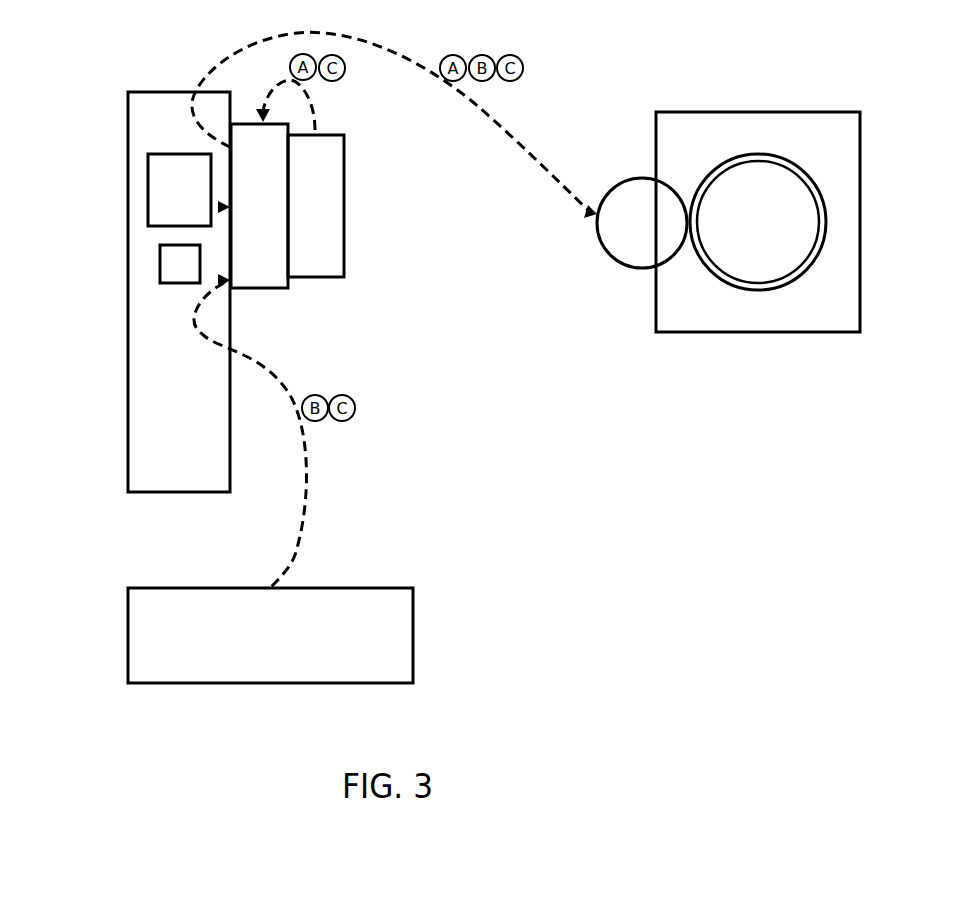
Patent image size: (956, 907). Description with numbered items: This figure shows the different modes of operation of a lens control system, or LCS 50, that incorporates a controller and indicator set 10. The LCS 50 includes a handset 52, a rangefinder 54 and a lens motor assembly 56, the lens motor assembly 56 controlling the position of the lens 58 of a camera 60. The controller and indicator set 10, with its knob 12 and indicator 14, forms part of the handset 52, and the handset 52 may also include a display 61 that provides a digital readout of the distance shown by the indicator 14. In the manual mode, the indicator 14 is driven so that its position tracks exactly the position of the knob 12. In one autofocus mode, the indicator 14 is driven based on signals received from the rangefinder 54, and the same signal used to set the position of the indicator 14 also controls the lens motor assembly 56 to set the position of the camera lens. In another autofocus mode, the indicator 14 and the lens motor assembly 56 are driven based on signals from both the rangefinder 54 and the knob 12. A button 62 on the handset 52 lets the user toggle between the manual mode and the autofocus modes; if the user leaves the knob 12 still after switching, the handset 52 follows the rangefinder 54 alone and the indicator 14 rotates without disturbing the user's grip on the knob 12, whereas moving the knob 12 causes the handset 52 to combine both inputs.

The controller and indicator set 10 is at (318, 247).
The knob 12 is at (347, 245).
The indicator 14 is at (257, 290).
The LCS 50 is at (92, 39).
The handset 52 is at (127, 455).
The rangefinder 54 is at (415, 633).
The lens motor assembly 56 is at (602, 248).
The lens 58 is at (715, 277).
The camera 60 is at (743, 110).
The display 61 is at (147, 170).
The button 62 is at (159, 260).